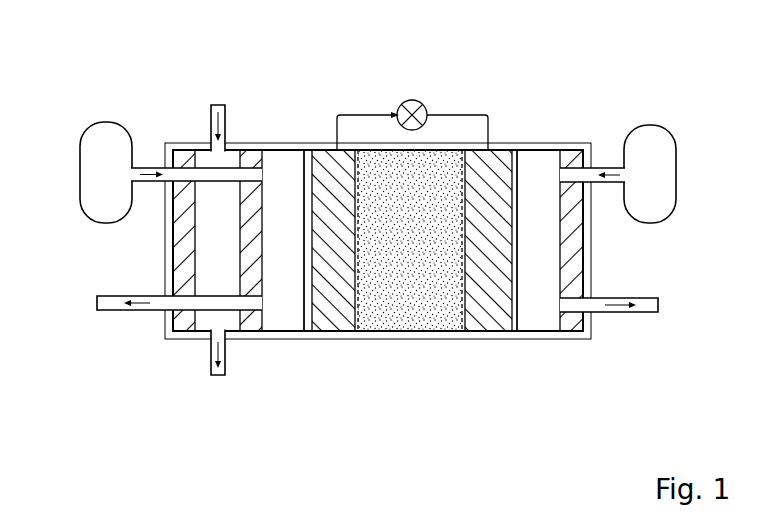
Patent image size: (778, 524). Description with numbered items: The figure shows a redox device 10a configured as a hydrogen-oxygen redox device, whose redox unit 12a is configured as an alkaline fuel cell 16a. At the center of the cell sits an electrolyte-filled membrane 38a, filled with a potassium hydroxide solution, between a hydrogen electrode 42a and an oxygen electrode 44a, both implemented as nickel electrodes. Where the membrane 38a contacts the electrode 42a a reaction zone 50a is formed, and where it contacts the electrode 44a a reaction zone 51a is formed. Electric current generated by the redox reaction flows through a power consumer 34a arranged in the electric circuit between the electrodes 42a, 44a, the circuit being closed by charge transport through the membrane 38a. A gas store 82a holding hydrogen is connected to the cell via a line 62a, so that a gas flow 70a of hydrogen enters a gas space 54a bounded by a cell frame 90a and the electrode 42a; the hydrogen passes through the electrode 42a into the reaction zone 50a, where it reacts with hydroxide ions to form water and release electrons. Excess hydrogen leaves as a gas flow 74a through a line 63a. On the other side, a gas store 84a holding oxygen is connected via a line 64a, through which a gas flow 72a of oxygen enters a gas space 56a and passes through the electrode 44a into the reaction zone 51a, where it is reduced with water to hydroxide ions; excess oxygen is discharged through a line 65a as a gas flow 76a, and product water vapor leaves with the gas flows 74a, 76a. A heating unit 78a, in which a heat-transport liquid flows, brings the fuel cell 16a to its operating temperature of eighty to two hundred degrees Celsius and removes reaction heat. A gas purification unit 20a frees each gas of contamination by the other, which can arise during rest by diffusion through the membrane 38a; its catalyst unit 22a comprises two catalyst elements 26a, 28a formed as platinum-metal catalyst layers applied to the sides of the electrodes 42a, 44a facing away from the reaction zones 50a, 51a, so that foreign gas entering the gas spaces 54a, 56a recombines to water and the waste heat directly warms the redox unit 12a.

The redox device 10a is at (375, 236).
The redox unit 12a is at (588, 134).
The alkaline fuel cell 16a is at (378, 240).
The gas purification unit 20a is at (409, 216).
The catalyst unit 22a is at (305, 346).
The catalyst element 26a is at (316, 136).
The catalyst element 28a is at (516, 153).
The power consumer 34a is at (412, 84).
The electrolyte-filled membrane 38a is at (405, 332).
The hydrogen electrode 42a is at (336, 332).
The oxygen electrode 44a is at (469, 332).
The reaction zone 50a is at (402, 105).
The reaction zone 51a is at (467, 114).
The gas space 54a is at (270, 156).
The gas space 56a is at (544, 157).
The line 62a is at (141, 166).
The line 63a is at (148, 312).
The line 64a is at (612, 167).
The line 65a is at (597, 313).
The gas flow 70a is at (140, 183).
The gas flow 72a is at (612, 183).
The gas flow 74a is at (137, 302).
The gas flow 76a is at (617, 297).
The heating unit 78a is at (204, 156).
The gas store 82a is at (107, 172).
The gas store 84a is at (664, 172).
The cell frame 90a is at (188, 335).